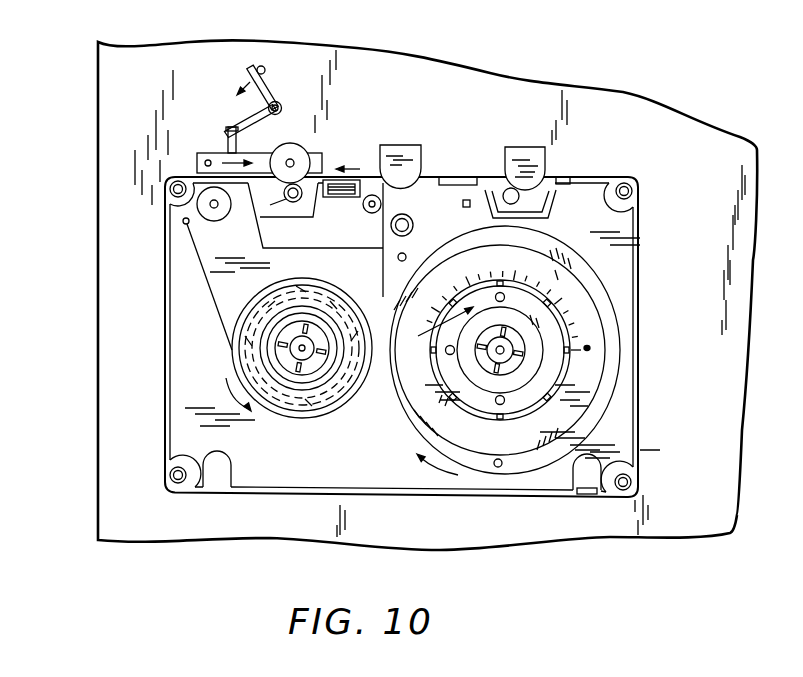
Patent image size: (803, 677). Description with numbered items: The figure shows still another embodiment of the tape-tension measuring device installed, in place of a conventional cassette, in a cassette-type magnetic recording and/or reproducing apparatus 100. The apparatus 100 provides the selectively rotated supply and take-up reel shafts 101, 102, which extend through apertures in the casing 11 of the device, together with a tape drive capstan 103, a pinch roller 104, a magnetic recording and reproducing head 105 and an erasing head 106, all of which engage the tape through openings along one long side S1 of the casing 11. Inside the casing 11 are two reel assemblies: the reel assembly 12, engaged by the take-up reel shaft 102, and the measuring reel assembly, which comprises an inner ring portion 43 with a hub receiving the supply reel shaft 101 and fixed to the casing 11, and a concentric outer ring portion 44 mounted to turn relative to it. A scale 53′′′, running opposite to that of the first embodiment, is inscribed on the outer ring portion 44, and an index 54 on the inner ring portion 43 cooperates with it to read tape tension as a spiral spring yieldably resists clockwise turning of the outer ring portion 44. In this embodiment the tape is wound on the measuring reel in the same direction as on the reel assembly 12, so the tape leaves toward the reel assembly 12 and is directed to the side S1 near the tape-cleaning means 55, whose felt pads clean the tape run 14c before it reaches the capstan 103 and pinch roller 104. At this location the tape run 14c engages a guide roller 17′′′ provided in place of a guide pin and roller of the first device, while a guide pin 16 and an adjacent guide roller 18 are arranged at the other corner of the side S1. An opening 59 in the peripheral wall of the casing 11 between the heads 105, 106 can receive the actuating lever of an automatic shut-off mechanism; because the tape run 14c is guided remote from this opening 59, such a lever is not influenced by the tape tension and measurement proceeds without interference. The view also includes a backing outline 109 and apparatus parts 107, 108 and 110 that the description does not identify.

The cassette-type magnetic recording and/or reproducing apparatus 100 is at (397, 295).
The display card 109 is at (98, 368).
The casing 11 is at (642, 314).
The reel assembly 12 is at (299, 372).
The take-up reel shaft 102 is at (307, 356).
The outer ring portion 44 is at (605, 422).
The inner ring portion 43 is at (553, 358).
The supply reel shaft 101 is at (497, 354).
The scale 53′′′ is at (540, 263).
The index 54 is at (438, 334).
The tape run 14c is at (375, 262).
The guide pin 16 is at (185, 223).
The guide roller 18 is at (202, 207).
The tape drive capstan 103 is at (272, 216).
The tape-cleaning means 55 is at (333, 205).
The guide roller 17′′′ is at (436, 199).
The opening 59 is at (462, 180).
The magnetic recording and reproducing head 105 is at (412, 150).
The erasing head 106 is at (534, 152).
The long side of casing S1 is at (446, 136).
The pinch roller 104 is at (313, 150).
The slide bar 107 is at (248, 150).
The slide pin 108 is at (205, 159).
The lever 110 is at (279, 82).